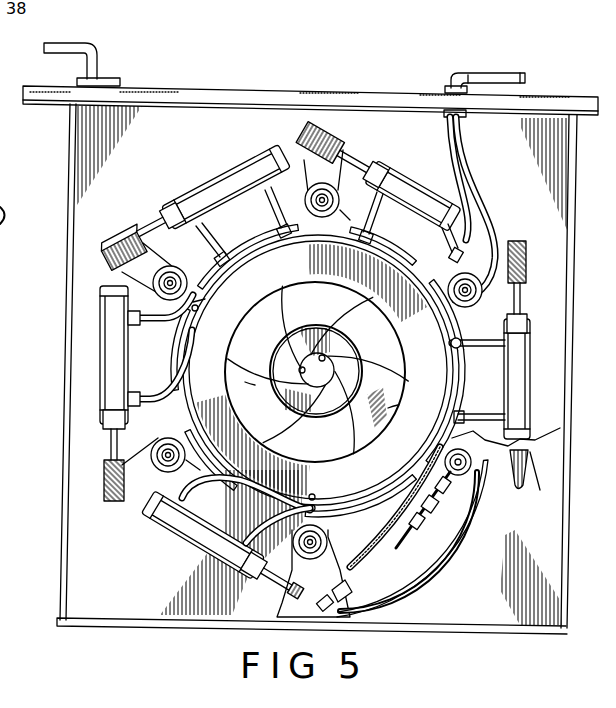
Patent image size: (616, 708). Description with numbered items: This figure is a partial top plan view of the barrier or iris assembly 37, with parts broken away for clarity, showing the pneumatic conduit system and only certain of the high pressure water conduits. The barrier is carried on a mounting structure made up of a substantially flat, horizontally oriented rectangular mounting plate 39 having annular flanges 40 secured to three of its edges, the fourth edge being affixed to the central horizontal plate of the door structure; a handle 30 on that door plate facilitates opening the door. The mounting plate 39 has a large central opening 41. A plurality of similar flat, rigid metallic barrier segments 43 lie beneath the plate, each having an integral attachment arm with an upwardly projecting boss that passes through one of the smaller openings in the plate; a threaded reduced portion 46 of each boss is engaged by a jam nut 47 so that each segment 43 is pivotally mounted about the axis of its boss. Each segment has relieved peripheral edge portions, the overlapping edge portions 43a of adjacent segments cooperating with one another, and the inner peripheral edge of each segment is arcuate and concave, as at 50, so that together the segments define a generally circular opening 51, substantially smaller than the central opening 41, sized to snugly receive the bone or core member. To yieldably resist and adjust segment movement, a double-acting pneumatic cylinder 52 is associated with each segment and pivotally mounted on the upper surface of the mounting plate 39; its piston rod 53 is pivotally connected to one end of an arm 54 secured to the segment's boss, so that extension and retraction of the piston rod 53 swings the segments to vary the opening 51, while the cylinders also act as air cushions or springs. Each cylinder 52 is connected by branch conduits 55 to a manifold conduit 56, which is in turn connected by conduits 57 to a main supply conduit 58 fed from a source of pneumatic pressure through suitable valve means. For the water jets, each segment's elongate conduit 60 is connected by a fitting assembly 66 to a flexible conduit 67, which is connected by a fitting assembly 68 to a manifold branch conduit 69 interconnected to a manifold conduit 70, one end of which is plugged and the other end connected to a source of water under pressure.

The handle 30 is at (76, 47).
The barrier or iris assembly 37 is at (283, 108).
The mounting plate 39 is at (515, 620).
The annular flanges 40 is at (62, 540).
The central opening 41 is at (418, 352).
The barrier segments 43 is at (367, 448).
The blade edges 43a is at (245, 382).
The threaded reduced portion 46 is at (190, 284).
The jam nut 47 is at (172, 265).
The arcuate concave edge portion 50 is at (300, 370).
The circular opening 51 is at (330, 356).
The double-acting pneumatic cylinders 52 is at (230, 178).
The piston rod 53 is at (153, 222).
The arm 54 is at (122, 238).
The branch conduits 55 is at (268, 208).
The manifold conduit 56 is at (274, 240).
The conduits 57 is at (478, 196).
The main supply conduit 58 is at (512, 75).
The elongate conduit 60 is at (450, 455).
The fitting assembly 66 is at (417, 508).
The flexible conduit 67 is at (388, 560).
The fitting assembly 68 is at (372, 598).
The manifold branch conduit 69 is at (517, 468).
The manifold conduit 70 is at (468, 560).